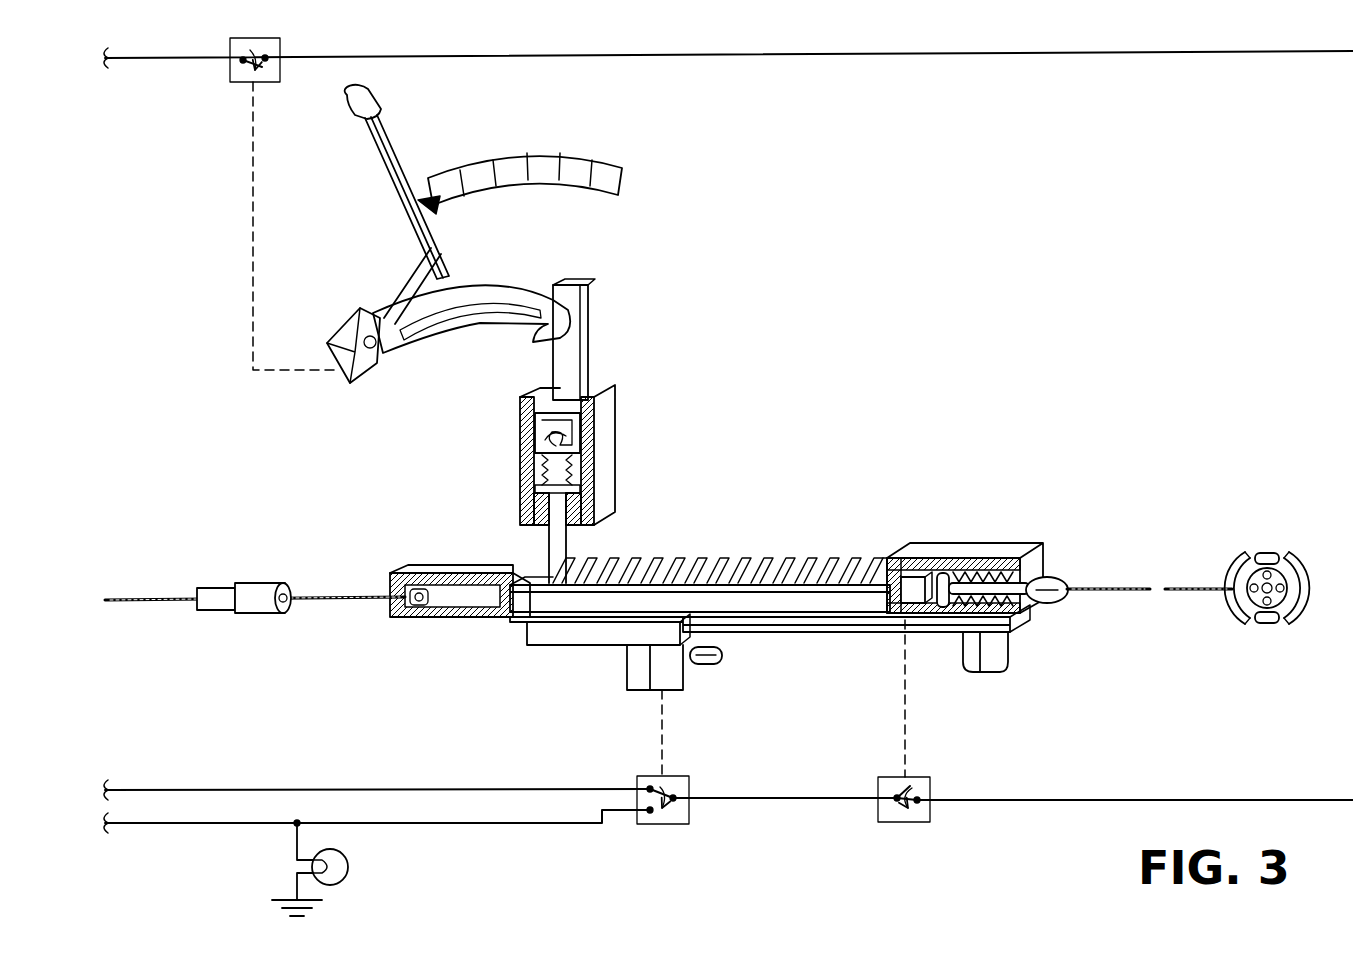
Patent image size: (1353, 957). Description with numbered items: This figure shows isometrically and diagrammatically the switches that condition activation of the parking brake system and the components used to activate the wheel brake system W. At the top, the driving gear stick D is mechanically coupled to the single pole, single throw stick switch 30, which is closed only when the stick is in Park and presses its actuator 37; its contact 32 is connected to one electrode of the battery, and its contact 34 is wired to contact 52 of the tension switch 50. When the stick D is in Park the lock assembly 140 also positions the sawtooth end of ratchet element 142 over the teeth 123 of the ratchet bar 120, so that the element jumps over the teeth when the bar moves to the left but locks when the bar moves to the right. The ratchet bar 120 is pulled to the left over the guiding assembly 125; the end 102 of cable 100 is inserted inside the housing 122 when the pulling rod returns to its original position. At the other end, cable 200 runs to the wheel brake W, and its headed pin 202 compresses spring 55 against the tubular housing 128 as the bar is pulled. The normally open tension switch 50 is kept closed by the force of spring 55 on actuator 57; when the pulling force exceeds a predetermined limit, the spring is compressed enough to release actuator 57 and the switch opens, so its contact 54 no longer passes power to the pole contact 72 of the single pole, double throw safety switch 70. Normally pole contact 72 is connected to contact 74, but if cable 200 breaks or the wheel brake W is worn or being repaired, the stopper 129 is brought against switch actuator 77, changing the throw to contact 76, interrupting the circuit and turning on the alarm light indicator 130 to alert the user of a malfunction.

The stick switch 30 is at (234, 85).
The contact 32 is at (243, 60).
The contact 34 is at (265, 62).
The actuator 37 is at (375, 362).
The driving gear stick D is at (408, 162).
The lock assembly 140 is at (581, 431).
The ratchet element 142 is at (557, 546).
The housing 122 is at (443, 605).
The end of cable 102 is at (427, 608).
The cable 100 is at (333, 607).
The teeth 123 is at (622, 560).
The ratchet bar 120 is at (773, 636).
The guiding assembly 125 is at (617, 671).
The switch actuator 77 is at (712, 666).
The tubular housing 128 is at (995, 554).
The actuator 57 is at (914, 578).
The spring 55 is at (990, 580).
The headed pin 202 is at (1052, 575).
The stopper 129 is at (1005, 655).
The cable 200 is at (1066, 606).
The wheel brake system W is at (1226, 580).
The safety switch 70 is at (669, 811).
The pole contact 72 is at (676, 797).
The contact 74 is at (650, 788).
The contact 76 is at (650, 812).
The tension switch 50 is at (912, 825).
The contact 52 is at (919, 798).
The contact 54 is at (897, 801).
The alarm light indicator 130 is at (366, 868).